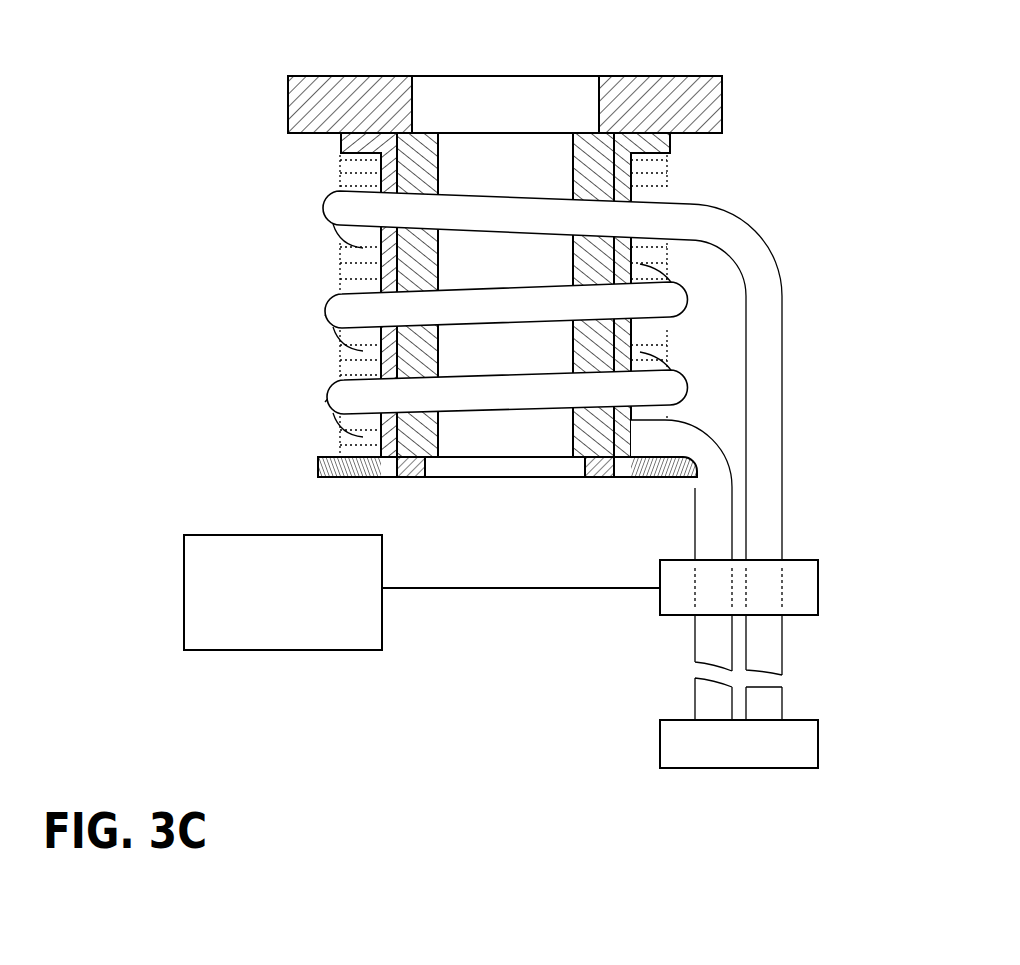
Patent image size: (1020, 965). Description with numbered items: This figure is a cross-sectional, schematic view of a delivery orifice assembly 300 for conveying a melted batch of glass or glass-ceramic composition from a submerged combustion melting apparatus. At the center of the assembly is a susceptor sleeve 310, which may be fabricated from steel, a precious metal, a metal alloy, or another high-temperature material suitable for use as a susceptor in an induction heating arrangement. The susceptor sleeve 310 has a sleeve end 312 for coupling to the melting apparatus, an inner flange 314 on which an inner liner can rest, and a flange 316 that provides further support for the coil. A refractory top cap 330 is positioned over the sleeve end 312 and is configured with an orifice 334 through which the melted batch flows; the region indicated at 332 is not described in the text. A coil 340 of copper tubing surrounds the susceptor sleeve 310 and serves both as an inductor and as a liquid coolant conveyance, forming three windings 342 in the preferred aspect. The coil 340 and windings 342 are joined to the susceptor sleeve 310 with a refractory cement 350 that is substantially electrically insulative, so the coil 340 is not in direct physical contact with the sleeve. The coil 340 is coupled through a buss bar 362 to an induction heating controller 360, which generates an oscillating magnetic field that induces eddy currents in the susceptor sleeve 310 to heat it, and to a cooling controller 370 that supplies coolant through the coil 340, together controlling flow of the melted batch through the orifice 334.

The delivery orifice assembly 300 is at (541, 363).
The susceptor sleeve 310 is at (645, 333).
The sleeve end 312 is at (668, 148).
The inner flange 314 is at (398, 482).
The flange 316 is at (355, 457).
The top cap 330 is at (728, 108).
The bore 332 is at (413, 148).
The orifice 334 is at (455, 68).
The coil 340 is at (767, 297).
The windings 342 is at (328, 305).
The refractory cement 350 is at (340, 167).
The induction heating controller 360 is at (279, 613).
The buss bar 362 is at (660, 556).
The cooling controller 370 is at (746, 758).